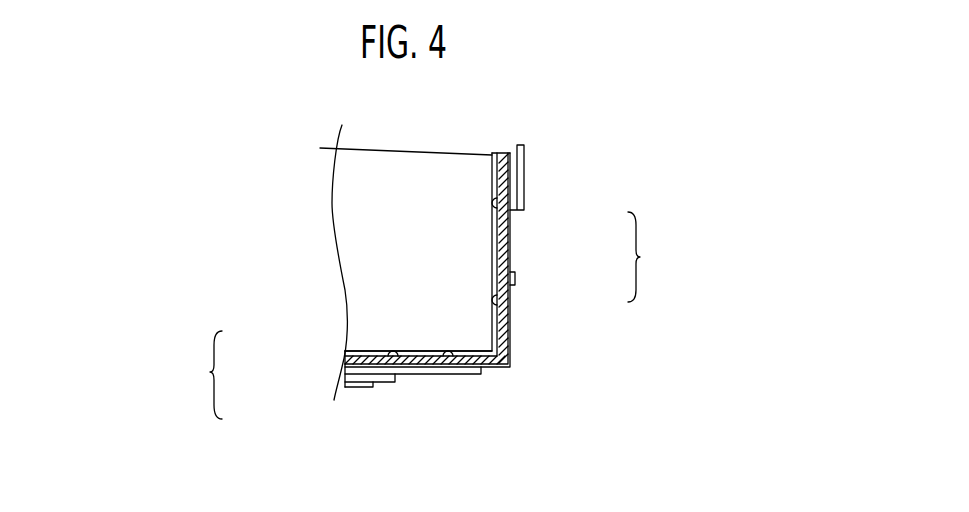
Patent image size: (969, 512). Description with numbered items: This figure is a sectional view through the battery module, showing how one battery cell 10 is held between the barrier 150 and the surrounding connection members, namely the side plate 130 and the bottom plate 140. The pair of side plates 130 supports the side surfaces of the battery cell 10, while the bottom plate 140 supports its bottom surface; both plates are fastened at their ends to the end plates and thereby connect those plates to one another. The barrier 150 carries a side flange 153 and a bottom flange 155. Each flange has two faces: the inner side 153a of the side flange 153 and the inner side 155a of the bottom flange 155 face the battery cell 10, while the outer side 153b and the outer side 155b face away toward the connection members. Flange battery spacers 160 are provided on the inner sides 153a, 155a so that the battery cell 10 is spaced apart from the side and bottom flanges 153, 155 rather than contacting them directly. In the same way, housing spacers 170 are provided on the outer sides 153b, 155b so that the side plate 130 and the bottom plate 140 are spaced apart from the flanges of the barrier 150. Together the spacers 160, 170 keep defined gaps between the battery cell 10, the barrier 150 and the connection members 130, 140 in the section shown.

The battery cell 10 is at (342, 207).
The side plate 130 is at (524, 196).
The bottom plate 140 is at (373, 383).
The barrier 150 is at (494, 367).
The side flange 153 is at (650, 257).
The inner side of side flange 153a is at (503, 260).
The outer side of side flange 153b is at (513, 278).
The bottom flange 155 is at (198, 375).
The inner side of bottom flange 155a is at (345, 352).
The outer side of bottom flange 155b is at (365, 386).
The flange battery spacer 160 is at (494, 203).
The housing spacer 170 is at (518, 168).